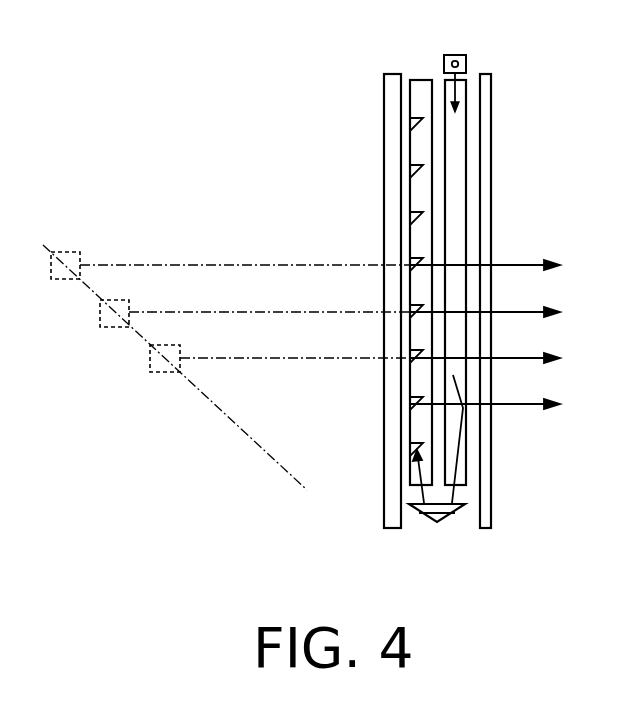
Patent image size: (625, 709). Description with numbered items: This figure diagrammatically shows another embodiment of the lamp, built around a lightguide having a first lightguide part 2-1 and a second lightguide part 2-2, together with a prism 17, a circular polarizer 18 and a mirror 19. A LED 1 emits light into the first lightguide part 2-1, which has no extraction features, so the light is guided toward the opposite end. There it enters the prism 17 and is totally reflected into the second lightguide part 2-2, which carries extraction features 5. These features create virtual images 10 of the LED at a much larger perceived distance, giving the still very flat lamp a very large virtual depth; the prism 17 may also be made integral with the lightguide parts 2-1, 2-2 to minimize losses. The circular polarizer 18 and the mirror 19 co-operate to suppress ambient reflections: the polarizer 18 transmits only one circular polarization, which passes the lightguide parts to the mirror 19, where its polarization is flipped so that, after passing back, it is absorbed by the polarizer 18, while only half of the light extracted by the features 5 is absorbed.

The LED 1 is at (467, 63).
The first lightguide part 2-1 is at (462, 115).
The second lightguide part 2-2 is at (422, 90).
The extraction features 5 is at (411, 121).
The virtual images 10 is at (62, 279).
The prism 17 is at (437, 522).
The circular polarizer 18 is at (486, 518).
The mirror 19 is at (390, 502).